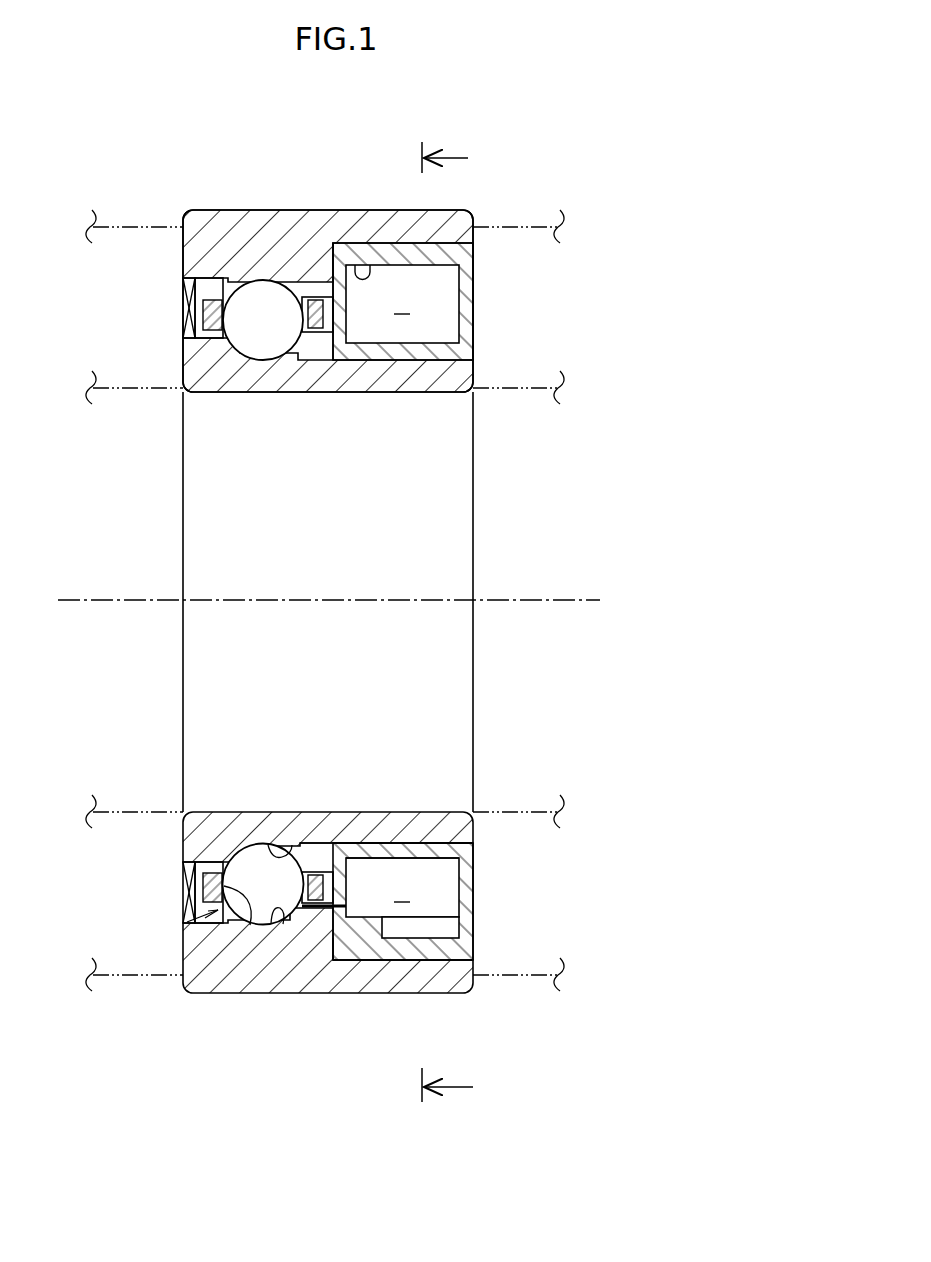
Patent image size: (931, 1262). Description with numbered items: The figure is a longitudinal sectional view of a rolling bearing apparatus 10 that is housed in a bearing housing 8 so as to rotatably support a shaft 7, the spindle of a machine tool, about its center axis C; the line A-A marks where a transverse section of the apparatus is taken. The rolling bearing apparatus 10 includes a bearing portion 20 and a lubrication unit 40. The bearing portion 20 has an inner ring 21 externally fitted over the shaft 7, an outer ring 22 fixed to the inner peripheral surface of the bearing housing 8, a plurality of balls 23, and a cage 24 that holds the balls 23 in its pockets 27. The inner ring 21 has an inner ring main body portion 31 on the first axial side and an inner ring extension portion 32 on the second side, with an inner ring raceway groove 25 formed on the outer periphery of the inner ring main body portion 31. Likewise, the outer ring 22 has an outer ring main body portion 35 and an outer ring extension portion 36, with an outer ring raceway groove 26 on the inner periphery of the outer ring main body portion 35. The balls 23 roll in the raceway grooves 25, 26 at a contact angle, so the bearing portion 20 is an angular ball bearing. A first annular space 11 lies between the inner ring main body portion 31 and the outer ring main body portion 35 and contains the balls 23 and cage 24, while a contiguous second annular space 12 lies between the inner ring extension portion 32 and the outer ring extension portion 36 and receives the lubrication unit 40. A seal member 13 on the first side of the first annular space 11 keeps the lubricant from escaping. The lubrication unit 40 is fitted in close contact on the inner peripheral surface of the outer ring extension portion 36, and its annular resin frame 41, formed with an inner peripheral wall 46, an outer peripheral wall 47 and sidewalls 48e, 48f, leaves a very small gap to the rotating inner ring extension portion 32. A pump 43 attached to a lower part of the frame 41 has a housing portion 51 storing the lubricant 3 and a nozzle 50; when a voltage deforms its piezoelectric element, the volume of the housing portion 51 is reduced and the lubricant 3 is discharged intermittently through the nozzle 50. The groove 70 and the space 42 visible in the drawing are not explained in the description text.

The rolling bearing apparatus 10 is at (471, 207).
The bearing portion 20 is at (259, 207).
The inner ring 21 is at (225, 373).
The outer ring 22 is at (203, 240).
The balls 23 is at (271, 340).
The cage 24 is at (212, 315).
The lubrication unit 40 is at (375, 240).
The groove 70 is at (362, 265).
The sidewall 48e is at (337, 282).
The sidewall 48f is at (465, 283).
The accommodating space 42 is at (444, 326).
The lubricant 3 is at (402, 601).
The bearing housing 8 is at (535, 237).
The shaft 7 is at (535, 388).
The center axis C is at (523, 600).
The line A- A is at (452, 625).
The inner ring main body portion 31 is at (206, 823).
The inner ring extension portion 32 is at (410, 830).
The outer ring main body portion 35 is at (197, 975).
The outer ring extension portion 36 is at (412, 977).
The frame 41 is at (468, 872).
The inner peripheral wall 46 is at (441, 852).
The outer peripheral wall 47 is at (445, 950).
The pump 43 is at (360, 923).
The housing portion 51 is at (382, 873).
The second annular space 12 is at (476, 930).
The seal member 13 is at (186, 890).
The first annular space 11 is at (183, 925).
The nozzle 50 is at (313, 912).
The inner ring raceway groove 25 is at (281, 842).
The outer ring raceway groove 26 is at (283, 920).
The pockets 27 is at (250, 926).